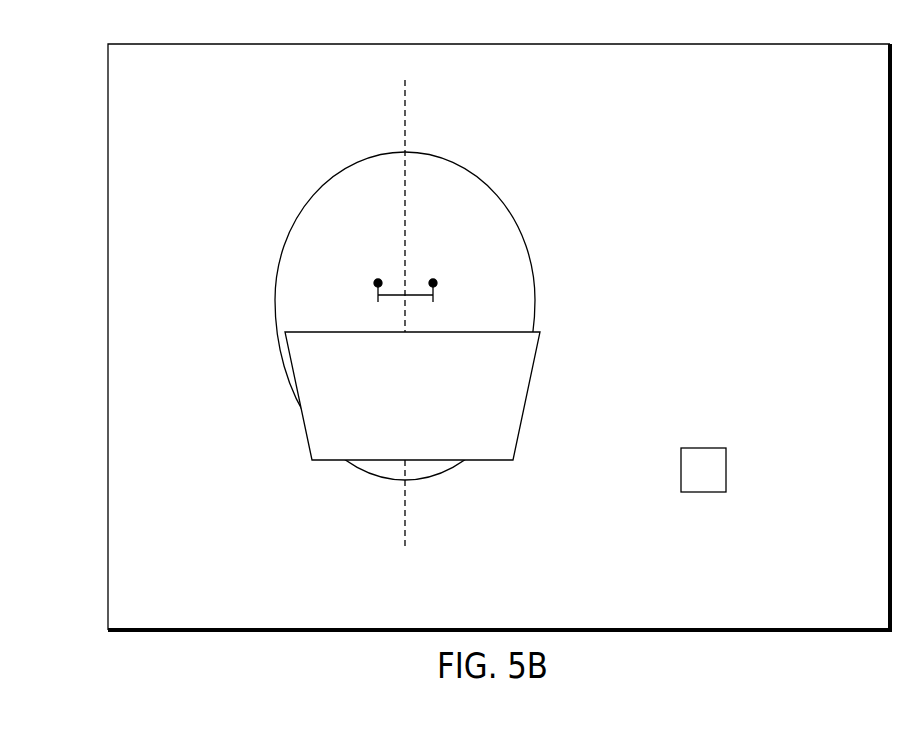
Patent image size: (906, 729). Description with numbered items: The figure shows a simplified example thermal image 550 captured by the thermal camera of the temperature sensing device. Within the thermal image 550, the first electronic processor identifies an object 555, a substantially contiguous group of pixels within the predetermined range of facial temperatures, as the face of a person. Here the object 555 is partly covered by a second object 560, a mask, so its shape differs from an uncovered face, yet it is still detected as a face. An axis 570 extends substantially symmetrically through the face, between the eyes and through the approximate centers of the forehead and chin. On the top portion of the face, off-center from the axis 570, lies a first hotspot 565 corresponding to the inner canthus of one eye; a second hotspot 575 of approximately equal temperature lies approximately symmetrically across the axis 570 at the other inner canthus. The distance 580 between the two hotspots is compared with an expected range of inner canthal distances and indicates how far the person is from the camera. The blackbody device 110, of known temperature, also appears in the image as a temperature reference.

The thermal image 550 is at (103, 26).
The object 555 is at (345, 188).
The axis 570 is at (404, 121).
The second object 560 is at (527, 395).
The distance 580 is at (415, 295).
The first hotspot 565 is at (375, 282).
The second hotspot 575 is at (436, 282).
The blackbody device 110 is at (681, 470).